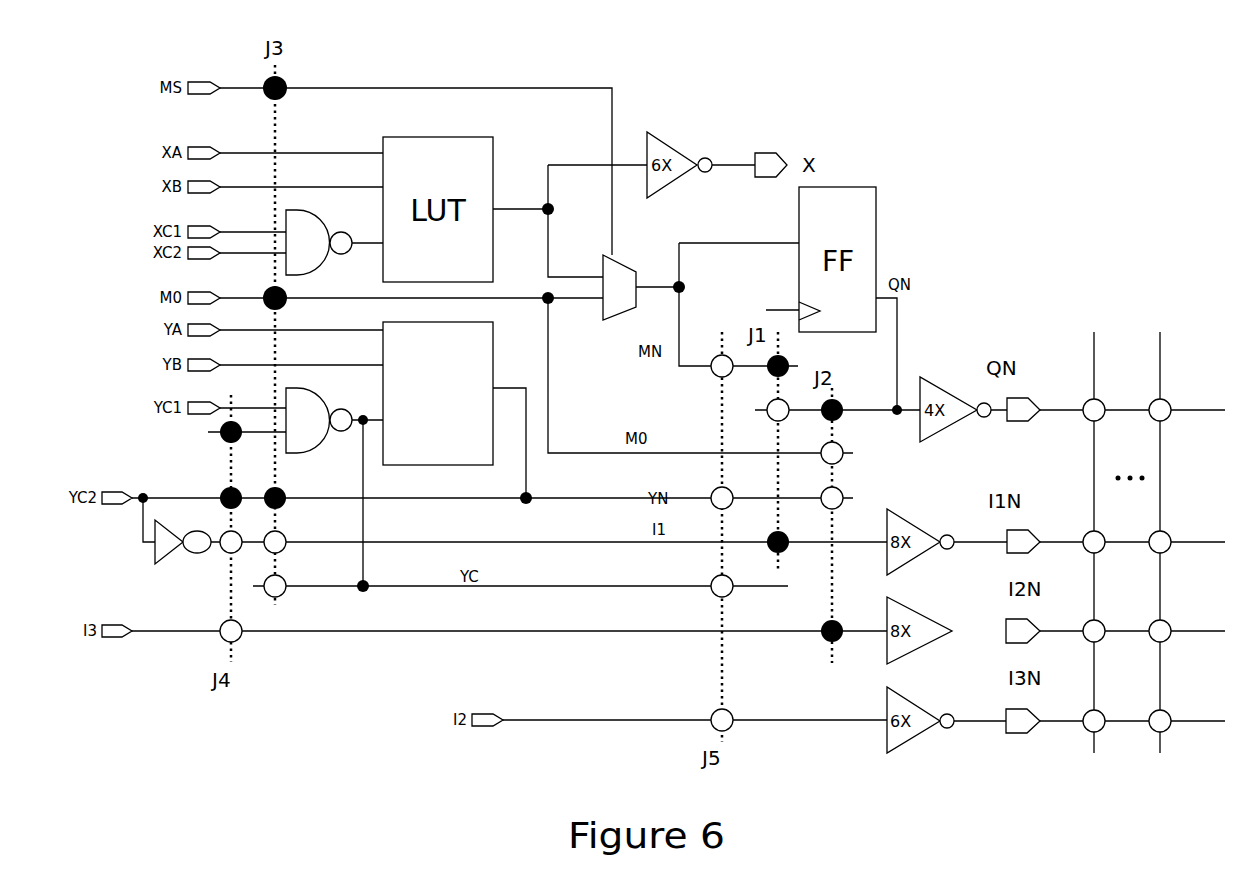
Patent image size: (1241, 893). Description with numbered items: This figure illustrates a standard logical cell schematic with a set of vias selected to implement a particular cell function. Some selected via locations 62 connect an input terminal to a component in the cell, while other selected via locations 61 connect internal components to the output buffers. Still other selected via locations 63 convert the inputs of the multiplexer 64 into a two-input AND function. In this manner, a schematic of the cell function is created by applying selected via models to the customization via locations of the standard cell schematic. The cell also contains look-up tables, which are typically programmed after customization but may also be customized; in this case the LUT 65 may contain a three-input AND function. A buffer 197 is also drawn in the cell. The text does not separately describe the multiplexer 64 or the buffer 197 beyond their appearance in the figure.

The selected via locations 61 is at (820, 632).
The selected via locations 62 is at (223, 490).
The selected via locations 63 is at (272, 487).
The multiplexer 64 is at (625, 262).
The LUT 65 is at (493, 343).
The buffer 197 is at (141, 558).